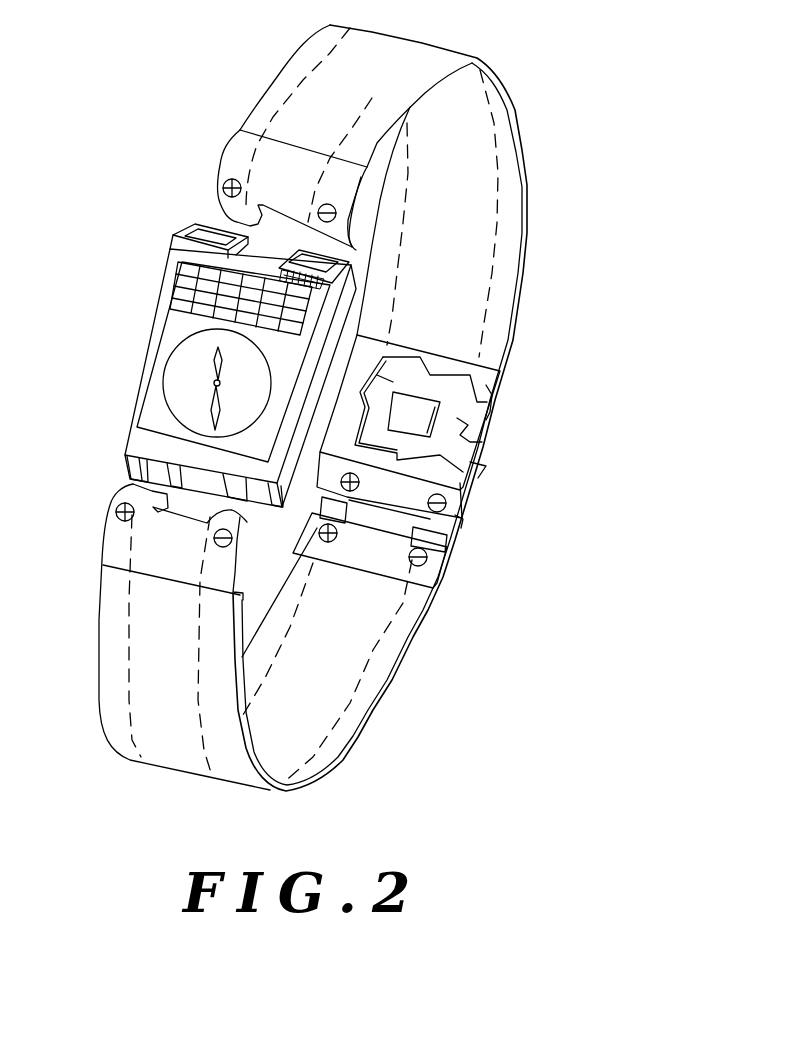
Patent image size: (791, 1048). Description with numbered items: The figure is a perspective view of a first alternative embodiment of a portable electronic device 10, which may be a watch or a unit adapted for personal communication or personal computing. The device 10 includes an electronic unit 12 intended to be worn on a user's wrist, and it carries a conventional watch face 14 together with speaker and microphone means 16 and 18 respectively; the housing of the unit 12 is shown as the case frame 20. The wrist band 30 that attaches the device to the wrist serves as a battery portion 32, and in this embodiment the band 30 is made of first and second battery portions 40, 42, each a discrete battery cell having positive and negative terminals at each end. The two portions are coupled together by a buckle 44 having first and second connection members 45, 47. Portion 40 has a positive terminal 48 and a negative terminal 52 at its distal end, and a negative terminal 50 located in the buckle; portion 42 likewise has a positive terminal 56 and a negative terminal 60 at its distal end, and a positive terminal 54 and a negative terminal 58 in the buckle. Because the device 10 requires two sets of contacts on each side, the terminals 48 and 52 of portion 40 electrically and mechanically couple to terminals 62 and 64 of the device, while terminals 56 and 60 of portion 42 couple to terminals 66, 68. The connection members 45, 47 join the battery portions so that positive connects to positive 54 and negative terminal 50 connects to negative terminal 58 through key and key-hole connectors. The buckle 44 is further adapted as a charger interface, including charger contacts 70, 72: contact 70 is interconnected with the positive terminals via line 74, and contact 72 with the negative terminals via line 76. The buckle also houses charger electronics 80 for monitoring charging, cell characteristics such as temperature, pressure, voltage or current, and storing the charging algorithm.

The device 10 is at (560, 770).
The electronic unit 12 is at (156, 306).
The watch face 14 is at (177, 367).
The speaker means 16 is at (187, 282).
The microphone means 18 is at (279, 267).
The case frame 20 is at (142, 392).
The wrist band 30 is at (526, 225).
The battery portion 32 is at (507, 185).
The first battery portion 40 is at (425, 62).
The second battery portion 42 is at (337, 733).
The buckle 44 is at (545, 513).
The first connection member 45 is at (467, 508).
The second connection member 47 is at (440, 580).
The positive terminal 48 is at (226, 174).
The negative terminal 50 is at (455, 520).
The negative terminal 52 is at (337, 183).
The positive terminal 54 is at (343, 500).
The positive terminal 56 is at (118, 532).
The negative terminal 58 is at (430, 553).
The negative terminal 60 is at (213, 562).
The terminal 62 is at (200, 230).
The terminal 64 is at (240, 130).
The terminal 66 is at (143, 472).
The terminal 68 is at (145, 468).
The charger contact 70 is at (490, 404).
The charger contact 72 is at (473, 469).
The line 74 is at (378, 388).
The line 76 is at (457, 420).
The charger electronics 80 is at (412, 403).